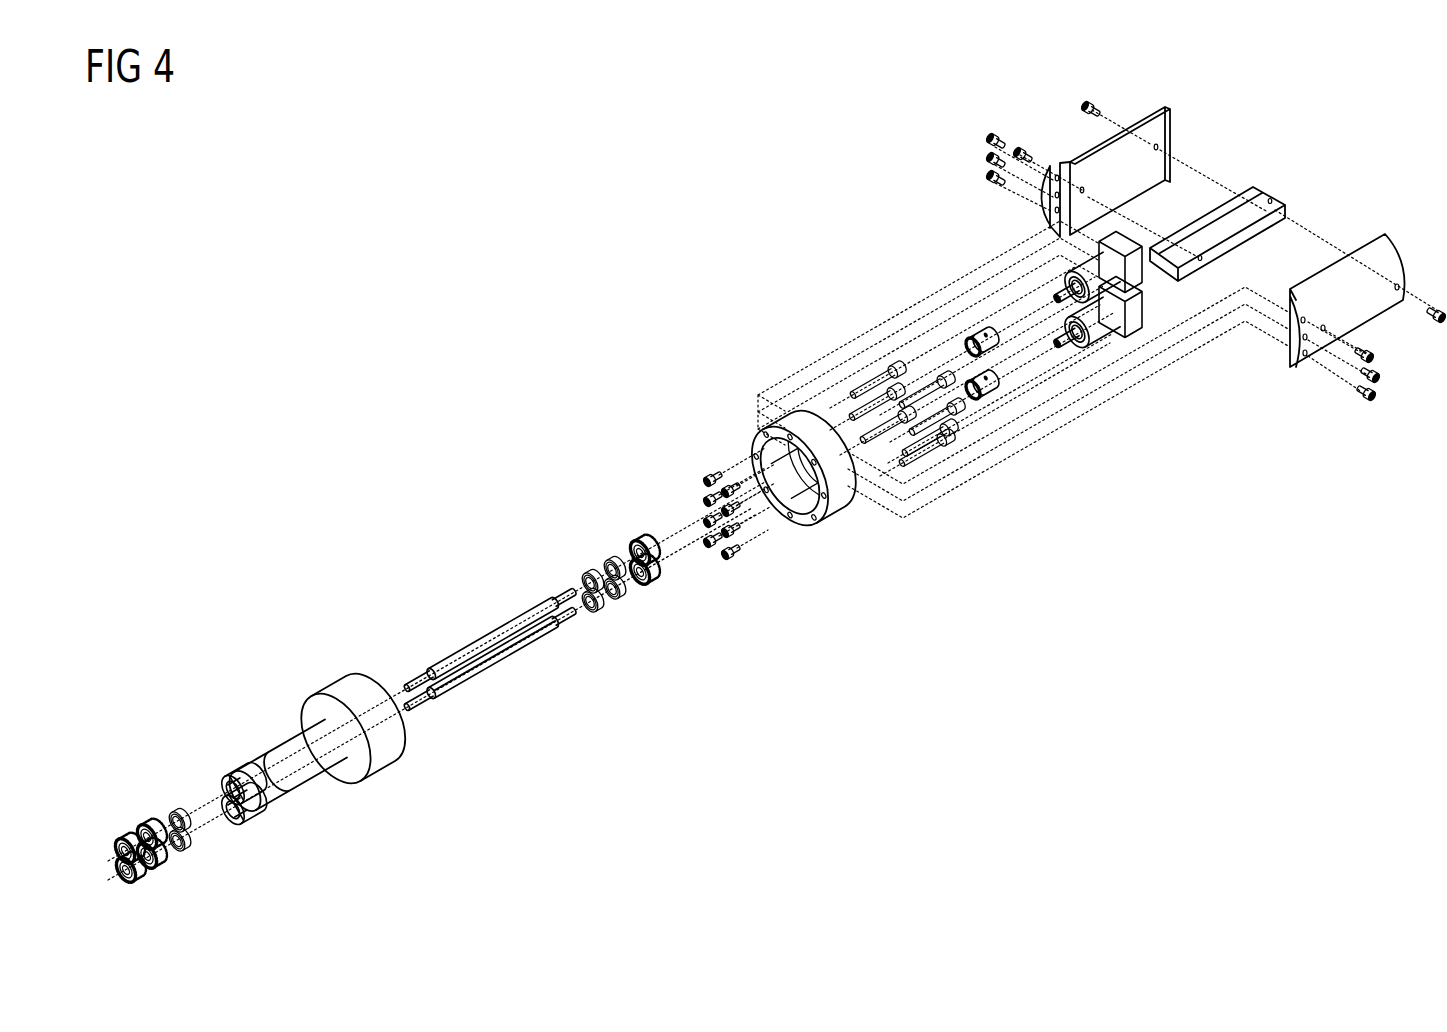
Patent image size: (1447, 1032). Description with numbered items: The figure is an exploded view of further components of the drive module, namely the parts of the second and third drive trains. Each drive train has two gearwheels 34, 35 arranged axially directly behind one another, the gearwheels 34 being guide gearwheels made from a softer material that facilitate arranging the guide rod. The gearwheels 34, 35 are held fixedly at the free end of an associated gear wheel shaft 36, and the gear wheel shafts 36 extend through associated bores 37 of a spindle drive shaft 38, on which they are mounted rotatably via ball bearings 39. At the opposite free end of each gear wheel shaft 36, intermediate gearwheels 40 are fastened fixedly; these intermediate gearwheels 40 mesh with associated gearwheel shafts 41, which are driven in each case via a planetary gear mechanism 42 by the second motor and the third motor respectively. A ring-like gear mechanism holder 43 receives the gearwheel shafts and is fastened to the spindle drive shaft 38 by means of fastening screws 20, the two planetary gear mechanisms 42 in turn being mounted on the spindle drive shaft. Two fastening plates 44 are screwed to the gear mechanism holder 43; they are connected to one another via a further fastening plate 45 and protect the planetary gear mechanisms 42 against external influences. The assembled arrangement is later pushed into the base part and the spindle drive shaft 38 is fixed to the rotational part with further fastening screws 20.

The fastening screws 20 is at (714, 474).
The gearwheels 34 is at (124, 840).
The gearwheels 35 is at (147, 826).
The gear wheel shafts 36 is at (483, 636).
The bores 37 is at (234, 776).
The spindle drive shaft 38 is at (300, 772).
The ball bearings 39 is at (177, 812).
The intermediate gearwheels 40 is at (641, 542).
The gearwheel shafts 41 is at (1060, 422).
The planetary gear mechanism 42 is at (1140, 300).
The gear mechanism holder 43 is at (832, 503).
The fastening plates 44 is at (1146, 125).
The further fastening plate 45 is at (1265, 188).